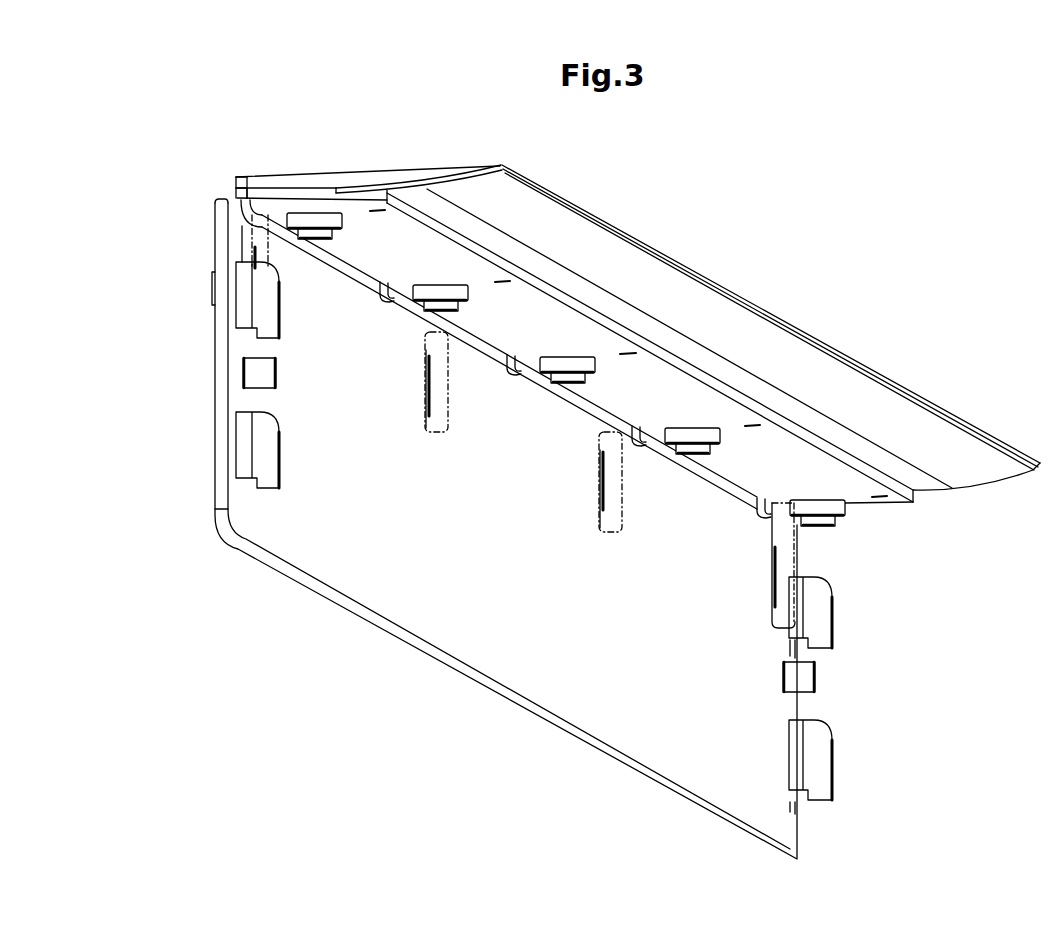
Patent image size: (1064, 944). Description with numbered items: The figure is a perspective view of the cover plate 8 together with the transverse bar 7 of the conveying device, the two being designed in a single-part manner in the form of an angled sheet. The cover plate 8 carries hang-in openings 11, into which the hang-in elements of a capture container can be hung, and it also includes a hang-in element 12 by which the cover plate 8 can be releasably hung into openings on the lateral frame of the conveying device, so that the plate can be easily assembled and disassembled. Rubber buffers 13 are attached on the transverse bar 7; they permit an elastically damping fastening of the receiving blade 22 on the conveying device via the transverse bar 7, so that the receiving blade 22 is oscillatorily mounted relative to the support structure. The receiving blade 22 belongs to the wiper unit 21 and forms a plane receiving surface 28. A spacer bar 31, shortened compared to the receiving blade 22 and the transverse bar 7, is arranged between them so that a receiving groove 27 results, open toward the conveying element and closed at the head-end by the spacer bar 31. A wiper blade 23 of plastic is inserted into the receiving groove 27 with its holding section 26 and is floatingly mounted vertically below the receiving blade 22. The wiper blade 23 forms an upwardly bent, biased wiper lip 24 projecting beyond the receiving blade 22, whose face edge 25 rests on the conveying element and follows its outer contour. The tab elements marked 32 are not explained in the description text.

The transverse bar 7 is at (853, 495).
The cover plate 8 is at (763, 806).
The hang-in openings 11 is at (255, 258).
The hang-in element 12 is at (247, 446).
The rubber buffers 13 is at (323, 218).
The wiper unit 21 is at (447, 158).
The receiving blade 22 is at (295, 180).
The wiper blade 23 is at (715, 301).
The wiper lip 24 is at (657, 251).
The face edge 25 is at (853, 358).
The holding section 26 is at (387, 170).
The receiving groove 27 is at (338, 186).
The receiving surface 28 is at (250, 165).
The spacer bar 31 is at (255, 188).
The tab 32 is at (258, 246).